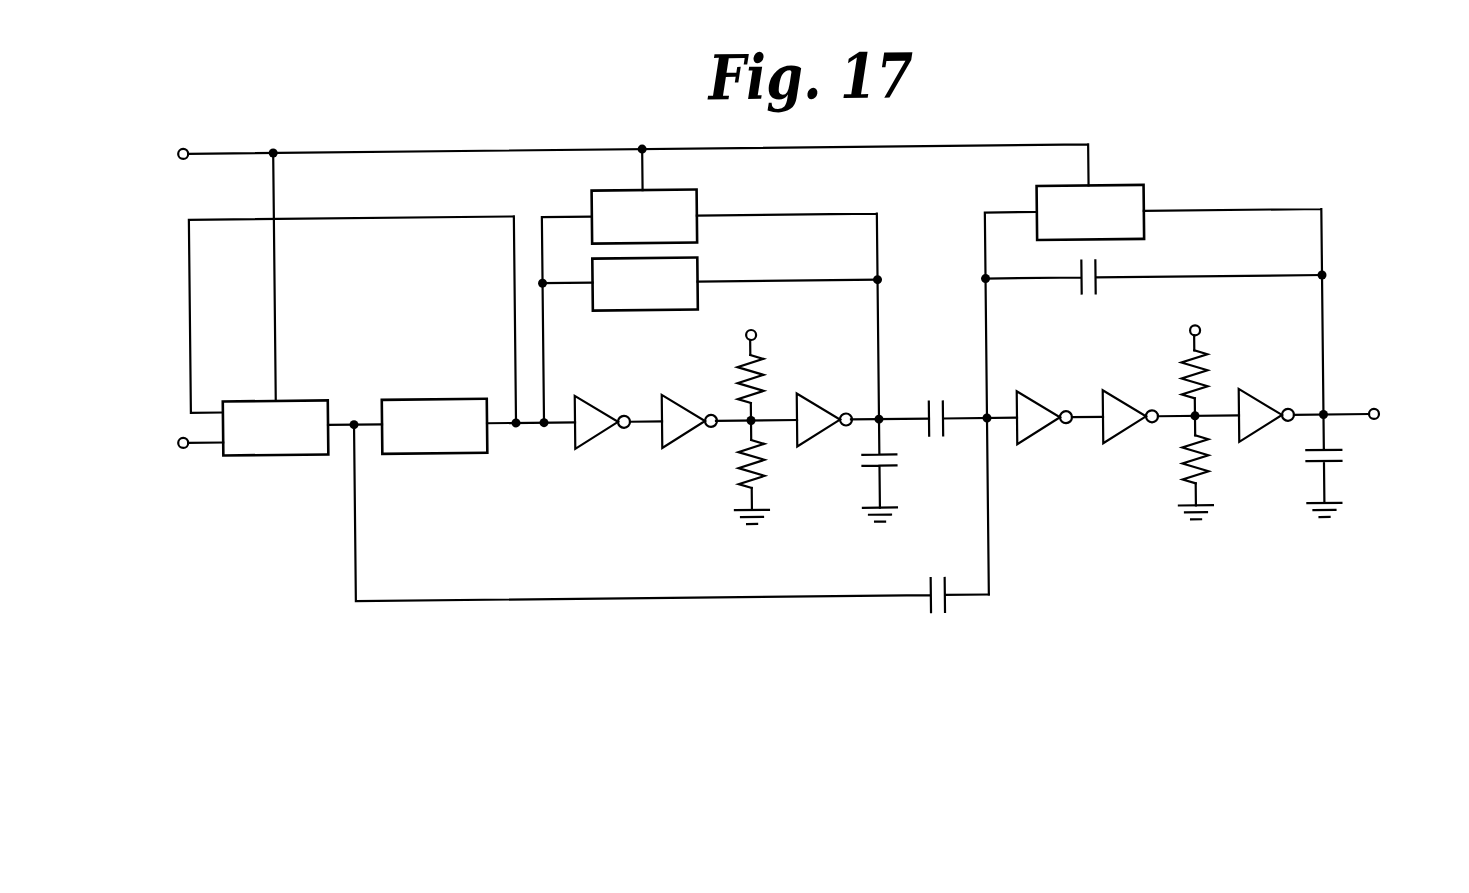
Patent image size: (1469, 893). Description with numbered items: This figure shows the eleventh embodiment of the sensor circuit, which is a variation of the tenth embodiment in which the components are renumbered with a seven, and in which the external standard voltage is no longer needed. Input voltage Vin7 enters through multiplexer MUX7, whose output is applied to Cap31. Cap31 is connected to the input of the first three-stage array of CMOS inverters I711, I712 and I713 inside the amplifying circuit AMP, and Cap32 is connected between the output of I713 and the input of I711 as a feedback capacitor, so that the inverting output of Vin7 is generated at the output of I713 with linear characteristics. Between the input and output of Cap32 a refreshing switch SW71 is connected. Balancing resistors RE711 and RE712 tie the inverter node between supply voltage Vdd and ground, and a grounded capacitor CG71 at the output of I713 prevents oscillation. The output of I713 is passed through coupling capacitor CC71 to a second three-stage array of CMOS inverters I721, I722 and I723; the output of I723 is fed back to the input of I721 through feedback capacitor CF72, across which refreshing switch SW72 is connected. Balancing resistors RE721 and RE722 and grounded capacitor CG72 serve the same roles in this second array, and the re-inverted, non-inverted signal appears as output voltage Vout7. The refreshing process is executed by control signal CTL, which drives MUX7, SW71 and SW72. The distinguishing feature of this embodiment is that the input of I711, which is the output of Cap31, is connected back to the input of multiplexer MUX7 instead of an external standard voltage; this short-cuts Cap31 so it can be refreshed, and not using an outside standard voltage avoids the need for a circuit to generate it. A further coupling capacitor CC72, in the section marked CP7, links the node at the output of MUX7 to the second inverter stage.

The control signal CTL is at (603, 268).
The input voltage Vin7 is at (171, 444).
The multiplexer MUX7 is at (355, 335).
The capacitor Cap31 is at (479, 426).
The feedback capacitor Cap32 is at (710, 284).
The refreshing switch SW71 is at (710, 305).
The refreshing switch SW72 is at (1155, 389).
The CMOS inverter I711 is at (618, 410).
The CMOS inverter I712 is at (728, 409).
The CMOS inverter I713 is at (861, 434).
The balancing resistor RE711 is at (793, 380).
The balancing resistor RE712 is at (715, 472).
The grounded capacitor CG71 is at (917, 470).
The coupling capacitor CC71 is at (962, 405).
The coupling capacitor CC72 is at (671, 518).
The feedback capacitor CF72 is at (1154, 293).
The CMOS inverter I721 is at (1058, 404).
The CMOS inverter I722 is at (1170, 403).
The CMOS inverter I723 is at (1302, 429).
The balancing resistor RE721 is at (1236, 375).
The balancing resistor RE722 is at (1158, 468).
The grounded capacitor CG72 is at (1361, 466).
The output voltage Vout7 is at (1414, 413).
The supply voltage Vdd is at (973, 319).
The capacitor coupling section CP7 is at (1011, 571).
The amplifying circuit AMP is at (1247, 200).